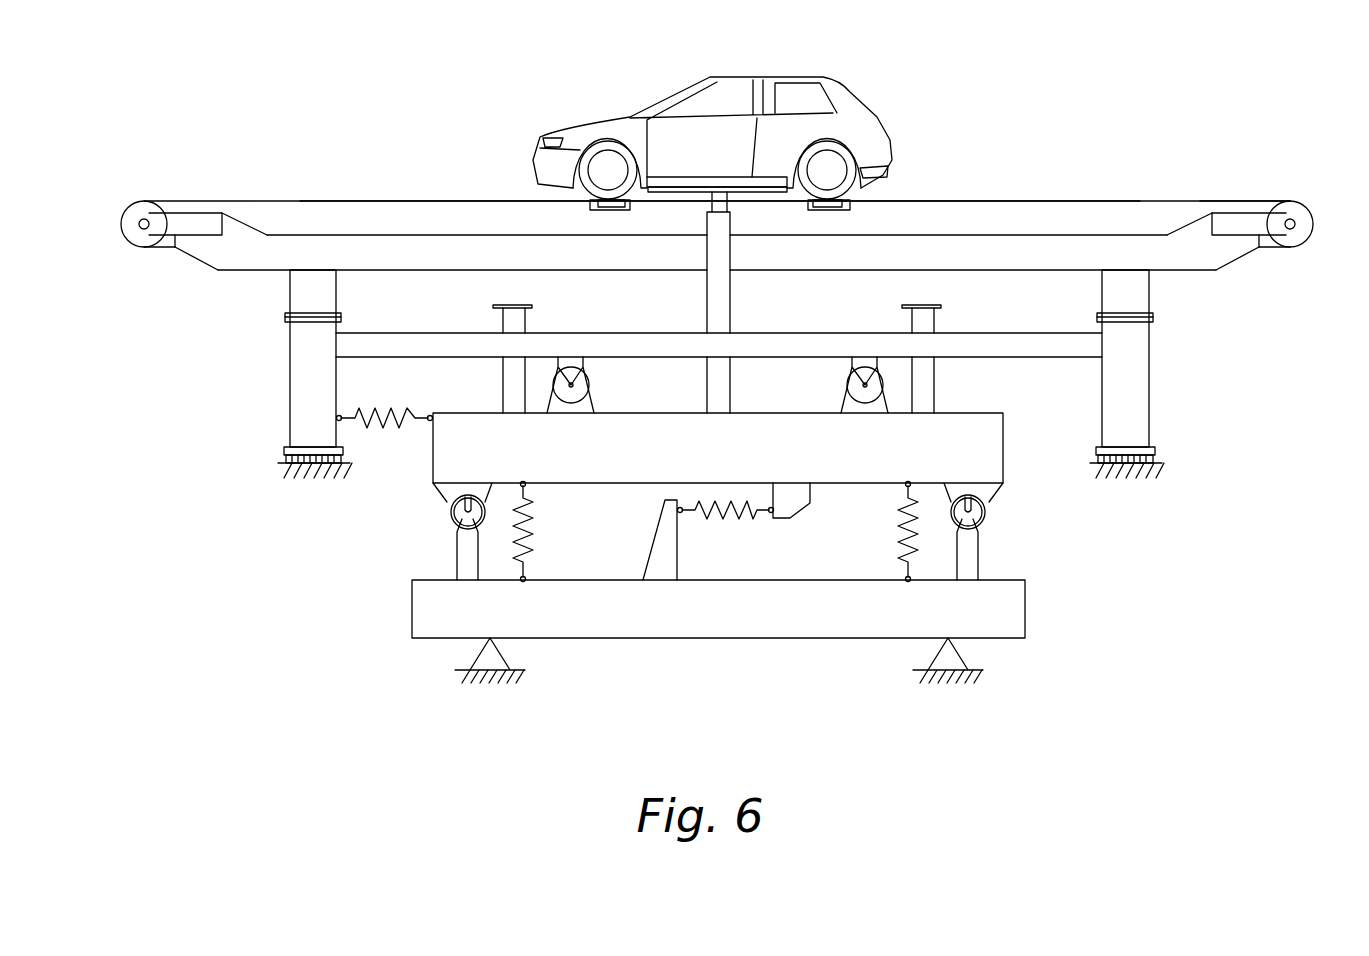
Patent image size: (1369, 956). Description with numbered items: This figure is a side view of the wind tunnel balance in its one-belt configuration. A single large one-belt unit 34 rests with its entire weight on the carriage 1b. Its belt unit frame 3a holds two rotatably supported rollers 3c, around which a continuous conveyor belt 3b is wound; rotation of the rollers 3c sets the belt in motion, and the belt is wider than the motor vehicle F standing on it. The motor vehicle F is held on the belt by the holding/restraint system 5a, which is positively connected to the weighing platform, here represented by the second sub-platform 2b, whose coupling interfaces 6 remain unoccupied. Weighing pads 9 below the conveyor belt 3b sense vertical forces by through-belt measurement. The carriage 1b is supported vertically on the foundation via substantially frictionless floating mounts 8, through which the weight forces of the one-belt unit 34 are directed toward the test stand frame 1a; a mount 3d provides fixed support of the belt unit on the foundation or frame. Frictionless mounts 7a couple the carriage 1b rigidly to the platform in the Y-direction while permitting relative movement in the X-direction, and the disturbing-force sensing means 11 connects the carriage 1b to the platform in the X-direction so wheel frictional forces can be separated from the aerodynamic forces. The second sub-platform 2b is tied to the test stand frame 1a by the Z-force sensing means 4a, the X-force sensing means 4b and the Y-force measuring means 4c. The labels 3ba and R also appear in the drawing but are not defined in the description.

The test stand frame 1a is at (1010, 610).
The carriage 1b is at (1133, 373).
The second sub-platform 2b is at (990, 447).
The belt unit frame 3a is at (1088, 253).
The conveyor belt 3b is at (1262, 200).
The belt upper run 3ba is at (1145, 200).
The rollers 3c is at (127, 229).
The mount 3d is at (295, 288).
The Z-force sensing means 4a is at (527, 540).
The X-force sensing means 4b is at (732, 528).
The Y-force measuring means 4c is at (452, 512).
The holding/restraint system 5a is at (723, 250).
The coupling interfaces 6 is at (505, 322).
The frictionless mounts 7a is at (569, 385).
The floating mount 8 is at (285, 450).
The weighing pads 9 is at (590, 212).
The disturbing-force sensing means 11 is at (378, 420).
The one-belt unit 34 is at (262, 220).
The motor vehicle F is at (716, 97).
The wheels R is at (608, 170).